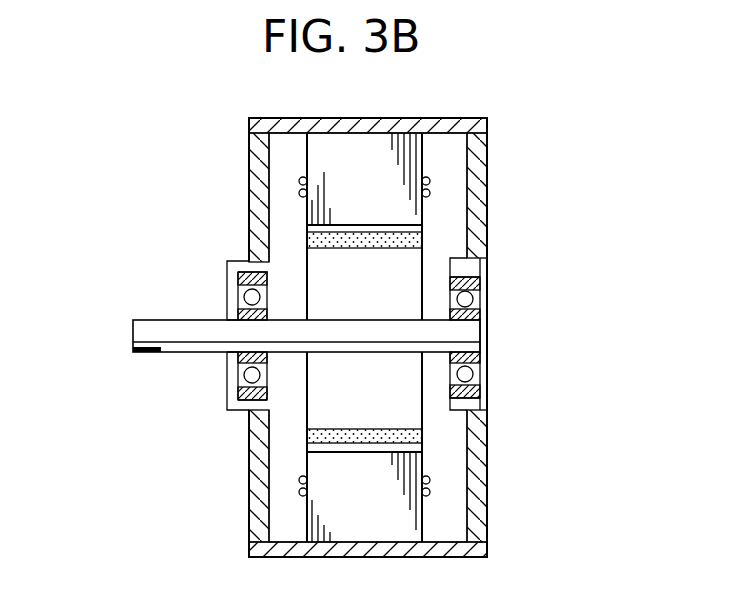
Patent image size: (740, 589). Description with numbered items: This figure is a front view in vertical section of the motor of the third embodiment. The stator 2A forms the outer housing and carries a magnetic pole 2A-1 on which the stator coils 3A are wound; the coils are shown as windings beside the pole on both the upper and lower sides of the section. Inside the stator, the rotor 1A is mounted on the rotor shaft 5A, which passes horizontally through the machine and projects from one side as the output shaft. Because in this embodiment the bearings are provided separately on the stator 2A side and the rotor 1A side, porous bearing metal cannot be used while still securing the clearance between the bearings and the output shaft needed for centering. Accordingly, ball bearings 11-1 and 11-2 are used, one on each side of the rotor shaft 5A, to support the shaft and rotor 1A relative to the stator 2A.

The stator 2A is at (256, 115).
The magnetic pole of the stator 2A-1 is at (323, 158).
The stator coils 3A is at (428, 181).
The rotor 1A is at (423, 240).
The rotor shaft 5A is at (170, 349).
The ball bearing 11-1 is at (238, 264).
The ball bearing 11-2 is at (473, 268).